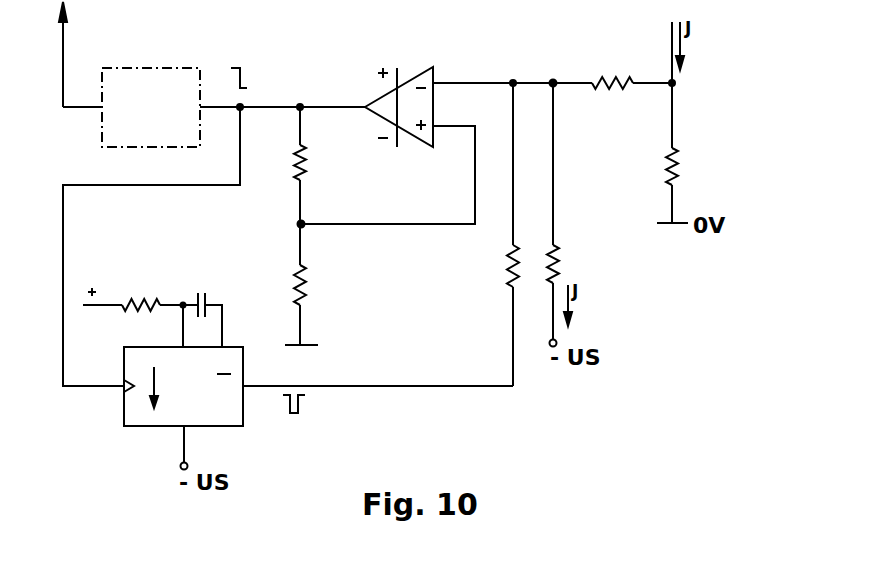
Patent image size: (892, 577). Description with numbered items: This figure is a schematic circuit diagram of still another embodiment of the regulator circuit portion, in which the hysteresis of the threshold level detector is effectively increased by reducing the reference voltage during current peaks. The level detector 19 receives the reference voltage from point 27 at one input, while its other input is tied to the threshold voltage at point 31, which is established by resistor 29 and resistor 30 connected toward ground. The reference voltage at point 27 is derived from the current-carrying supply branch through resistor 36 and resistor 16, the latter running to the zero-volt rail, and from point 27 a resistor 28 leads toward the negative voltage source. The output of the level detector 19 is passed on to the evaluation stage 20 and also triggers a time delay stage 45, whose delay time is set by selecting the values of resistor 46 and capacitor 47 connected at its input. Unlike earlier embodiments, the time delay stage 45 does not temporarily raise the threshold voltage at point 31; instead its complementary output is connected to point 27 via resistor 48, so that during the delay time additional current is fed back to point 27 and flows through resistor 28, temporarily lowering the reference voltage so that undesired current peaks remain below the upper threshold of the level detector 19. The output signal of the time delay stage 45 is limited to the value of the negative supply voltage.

The resistor 16 is at (666, 168).
The level detector 19 is at (434, 107).
The evaluation stage 20 is at (151, 107).
The reference voltage point 27 is at (553, 83).
The resistor 28 is at (557, 248).
The resistor 29 is at (303, 162).
The resistor 30 is at (303, 285).
The threshold voltage point 31 is at (301, 224).
The resistor 36 is at (604, 79).
The time delay stage 45 is at (135, 427).
The resistor 46 is at (135, 300).
The capacitor 47 is at (201, 289).
The resistor 48 is at (509, 261).